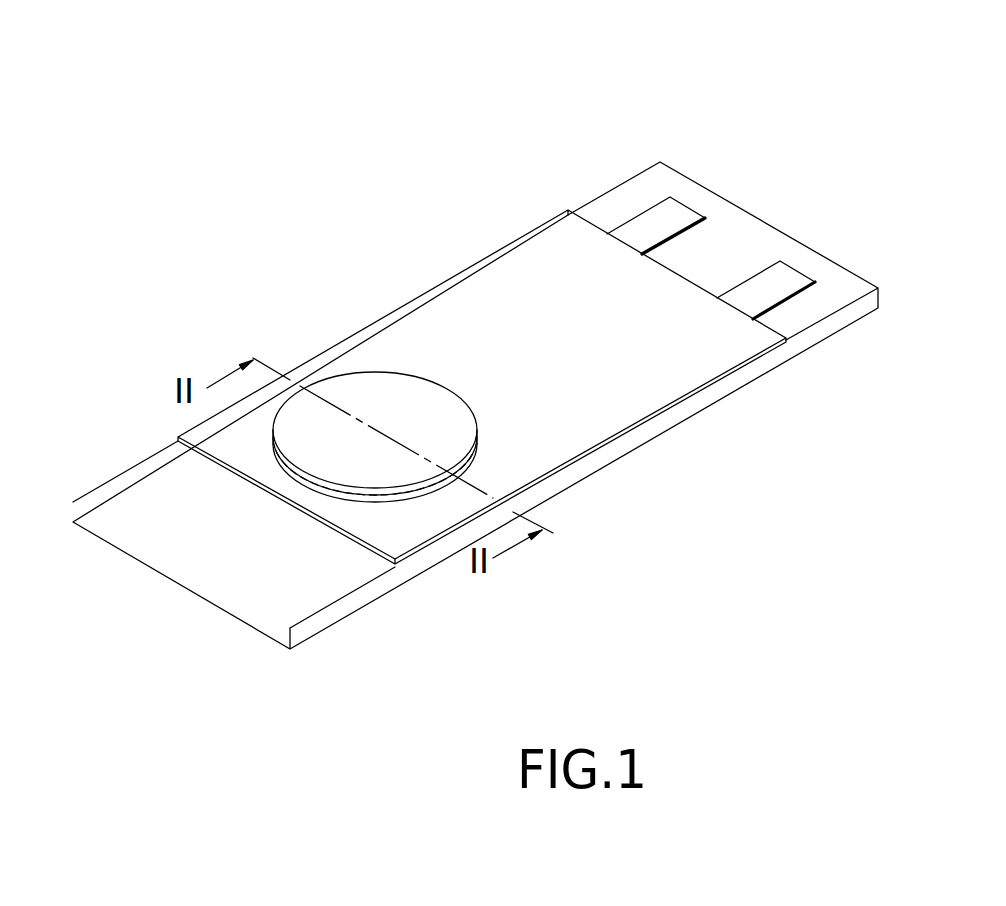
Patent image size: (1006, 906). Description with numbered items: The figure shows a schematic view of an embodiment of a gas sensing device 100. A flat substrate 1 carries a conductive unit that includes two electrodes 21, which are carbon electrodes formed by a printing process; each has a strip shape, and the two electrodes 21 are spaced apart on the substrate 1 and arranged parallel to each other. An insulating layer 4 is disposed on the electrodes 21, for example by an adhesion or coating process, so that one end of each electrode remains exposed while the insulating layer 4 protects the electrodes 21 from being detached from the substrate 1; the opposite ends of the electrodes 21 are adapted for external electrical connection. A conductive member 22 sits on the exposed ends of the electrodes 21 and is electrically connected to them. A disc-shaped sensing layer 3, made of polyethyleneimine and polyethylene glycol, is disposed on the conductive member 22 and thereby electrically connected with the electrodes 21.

The gas sensing device 100 is at (539, 367).
The substrate 1 is at (273, 573).
The electrodes 21 is at (780, 275).
The conductive member 22 is at (392, 502).
The sensing layer 3 is at (455, 432).
The insulating layer 4 is at (543, 270).